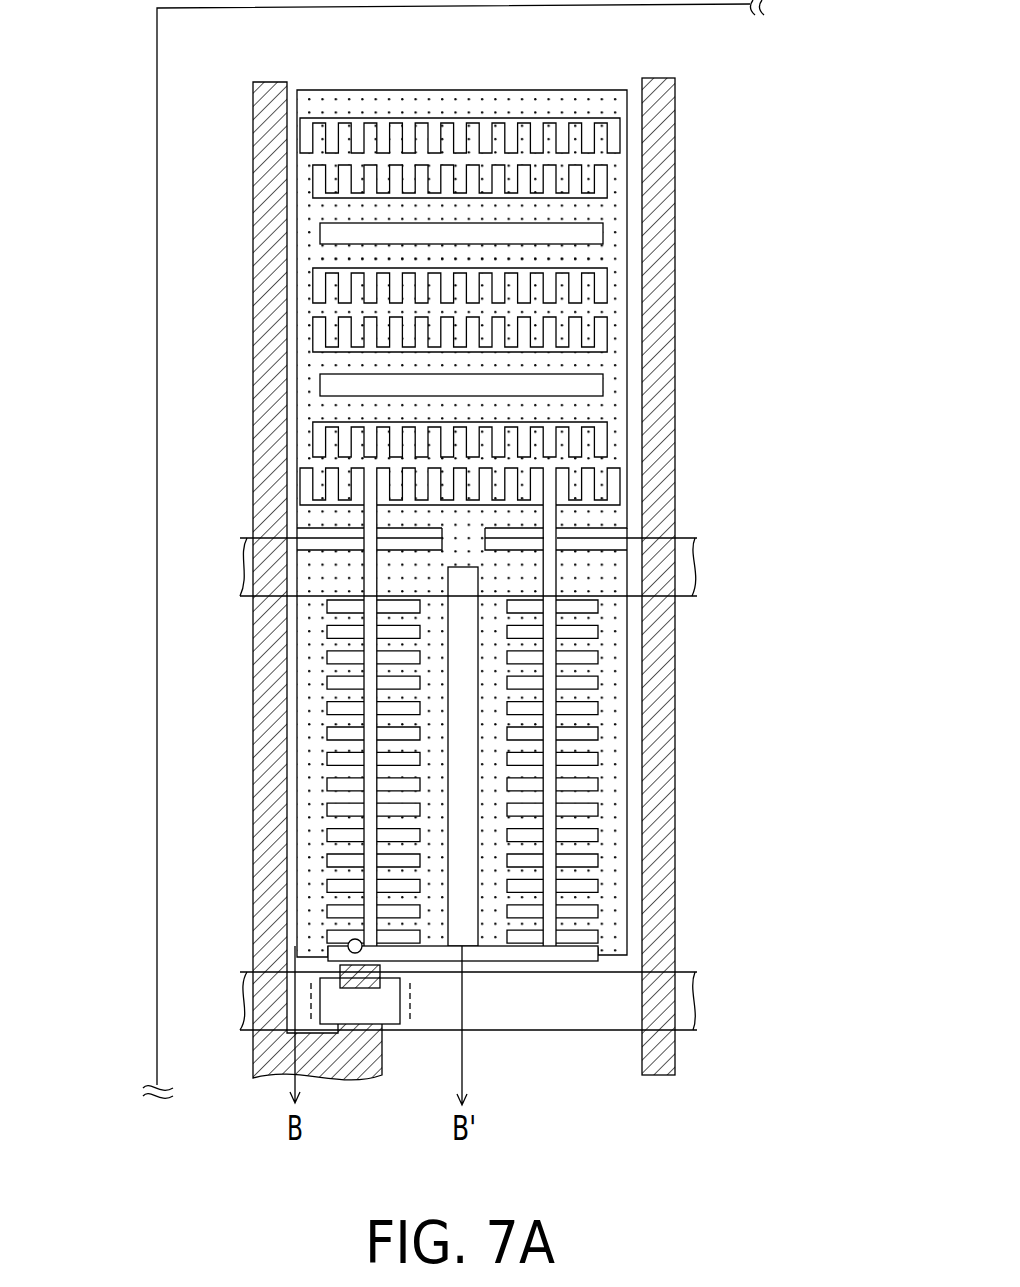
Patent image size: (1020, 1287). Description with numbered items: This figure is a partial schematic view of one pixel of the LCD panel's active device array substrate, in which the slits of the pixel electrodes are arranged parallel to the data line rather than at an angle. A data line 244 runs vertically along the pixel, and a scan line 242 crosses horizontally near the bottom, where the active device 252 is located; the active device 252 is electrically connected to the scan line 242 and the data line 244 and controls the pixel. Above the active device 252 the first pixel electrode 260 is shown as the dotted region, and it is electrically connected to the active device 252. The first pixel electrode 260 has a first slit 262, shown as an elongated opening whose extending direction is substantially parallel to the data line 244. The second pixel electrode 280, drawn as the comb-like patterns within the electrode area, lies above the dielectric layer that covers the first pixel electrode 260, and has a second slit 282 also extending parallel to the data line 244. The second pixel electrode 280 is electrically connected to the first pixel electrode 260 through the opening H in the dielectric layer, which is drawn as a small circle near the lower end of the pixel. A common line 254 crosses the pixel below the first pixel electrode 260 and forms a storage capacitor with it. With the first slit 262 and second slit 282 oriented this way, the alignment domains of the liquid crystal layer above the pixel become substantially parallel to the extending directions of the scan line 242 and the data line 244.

The data line 244 is at (268, 105).
The first pixel electrode 260 is at (618, 103).
The second pixel electrode 280 is at (612, 157).
The first slit 262 is at (603, 233).
The second slit 282 is at (600, 253).
The common line 254 is at (688, 565).
The scan line 242 is at (688, 1005).
The active device 252 is at (404, 1012).
The opening H is at (348, 942).